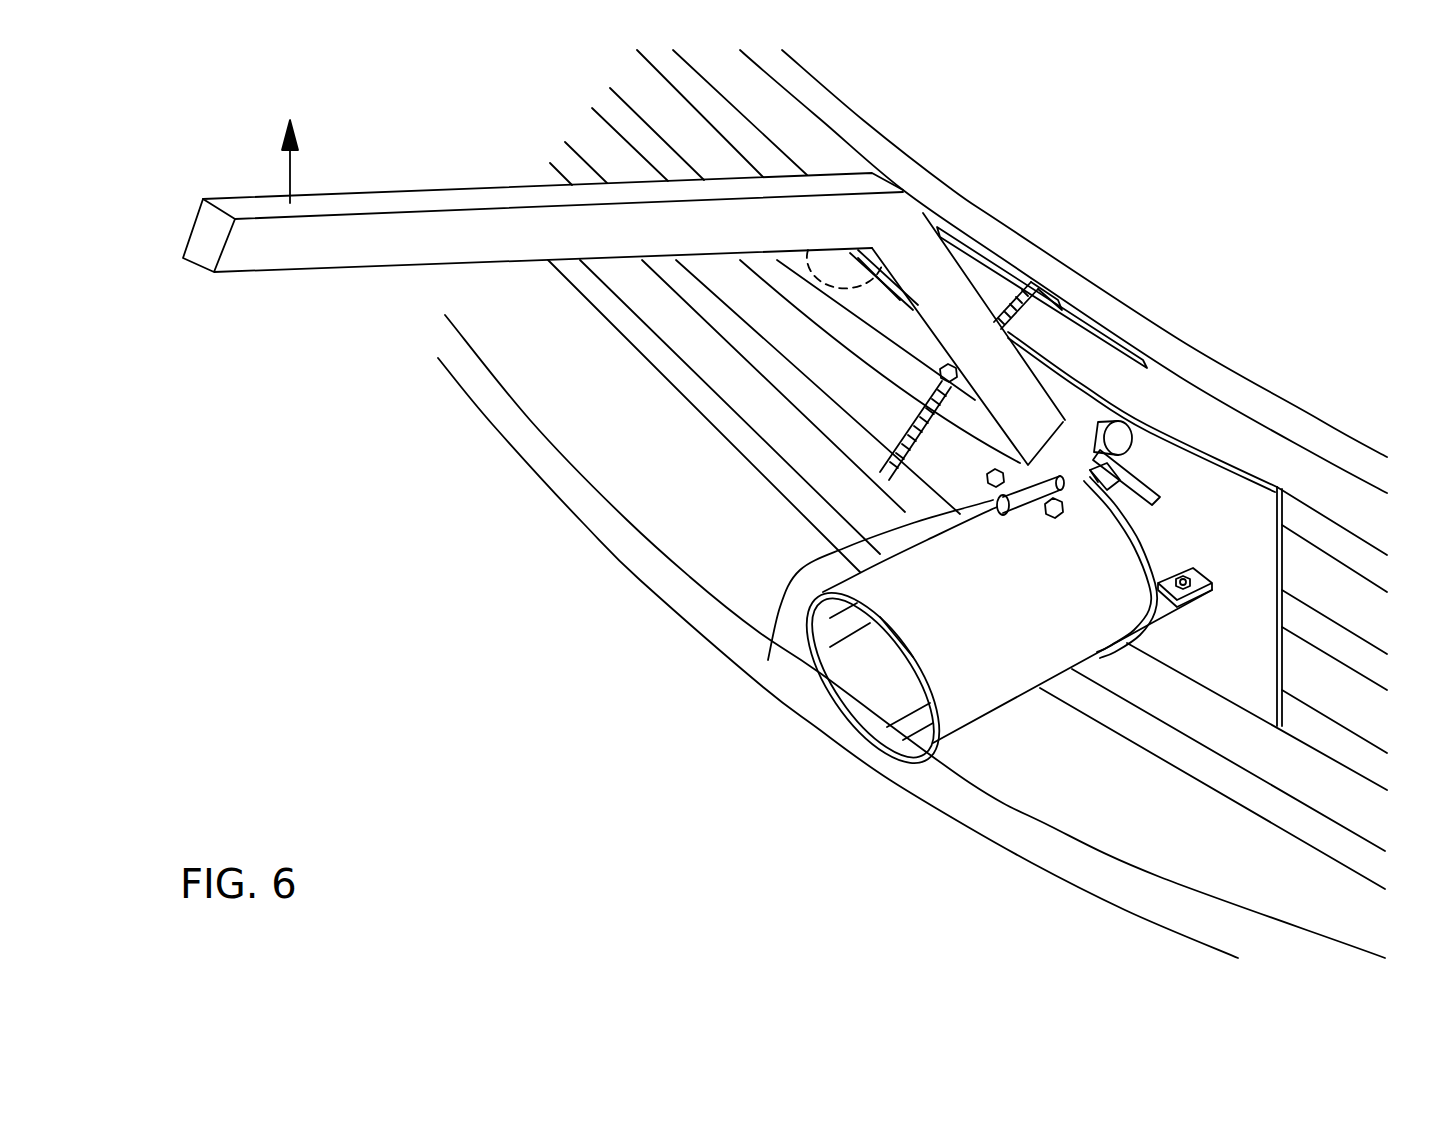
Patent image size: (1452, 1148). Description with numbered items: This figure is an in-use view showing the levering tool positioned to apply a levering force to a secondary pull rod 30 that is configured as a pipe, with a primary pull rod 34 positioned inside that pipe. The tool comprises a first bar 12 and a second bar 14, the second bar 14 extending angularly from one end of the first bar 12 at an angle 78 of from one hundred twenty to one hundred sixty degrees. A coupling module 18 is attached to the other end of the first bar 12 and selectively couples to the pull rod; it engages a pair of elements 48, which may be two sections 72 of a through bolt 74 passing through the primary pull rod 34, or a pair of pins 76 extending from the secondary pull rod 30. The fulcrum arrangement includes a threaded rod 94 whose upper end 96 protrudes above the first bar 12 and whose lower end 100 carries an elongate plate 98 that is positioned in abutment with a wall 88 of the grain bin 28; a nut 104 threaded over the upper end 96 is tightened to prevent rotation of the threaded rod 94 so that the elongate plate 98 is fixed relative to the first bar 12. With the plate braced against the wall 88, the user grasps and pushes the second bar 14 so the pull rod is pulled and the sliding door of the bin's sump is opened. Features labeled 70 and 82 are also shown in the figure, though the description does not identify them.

The first bar 12 is at (922, 200).
The second bar 14 is at (360, 303).
The coupling module 18 is at (1175, 445).
The grain bin 28 is at (1272, 338).
The secondary pull rod 30 is at (1118, 437).
The primary pull rod 34 is at (1040, 500).
The pair of elements 48 is at (1160, 542).
The tube opening 70 is at (1013, 510).
The sections 72 is at (768, 660).
The through bolt 74 is at (1057, 518).
The pins 76 is at (1098, 482).
The angle 78 is at (858, 258).
The bar top face 82 is at (469, 188).
The wall 88 is at (1110, 312).
The threaded rod 94 is at (1052, 320).
The upper end 96 is at (997, 500).
The elongate plate 98 is at (962, 248).
The lower end 100 is at (1015, 305).
The nut 104 is at (940, 373).